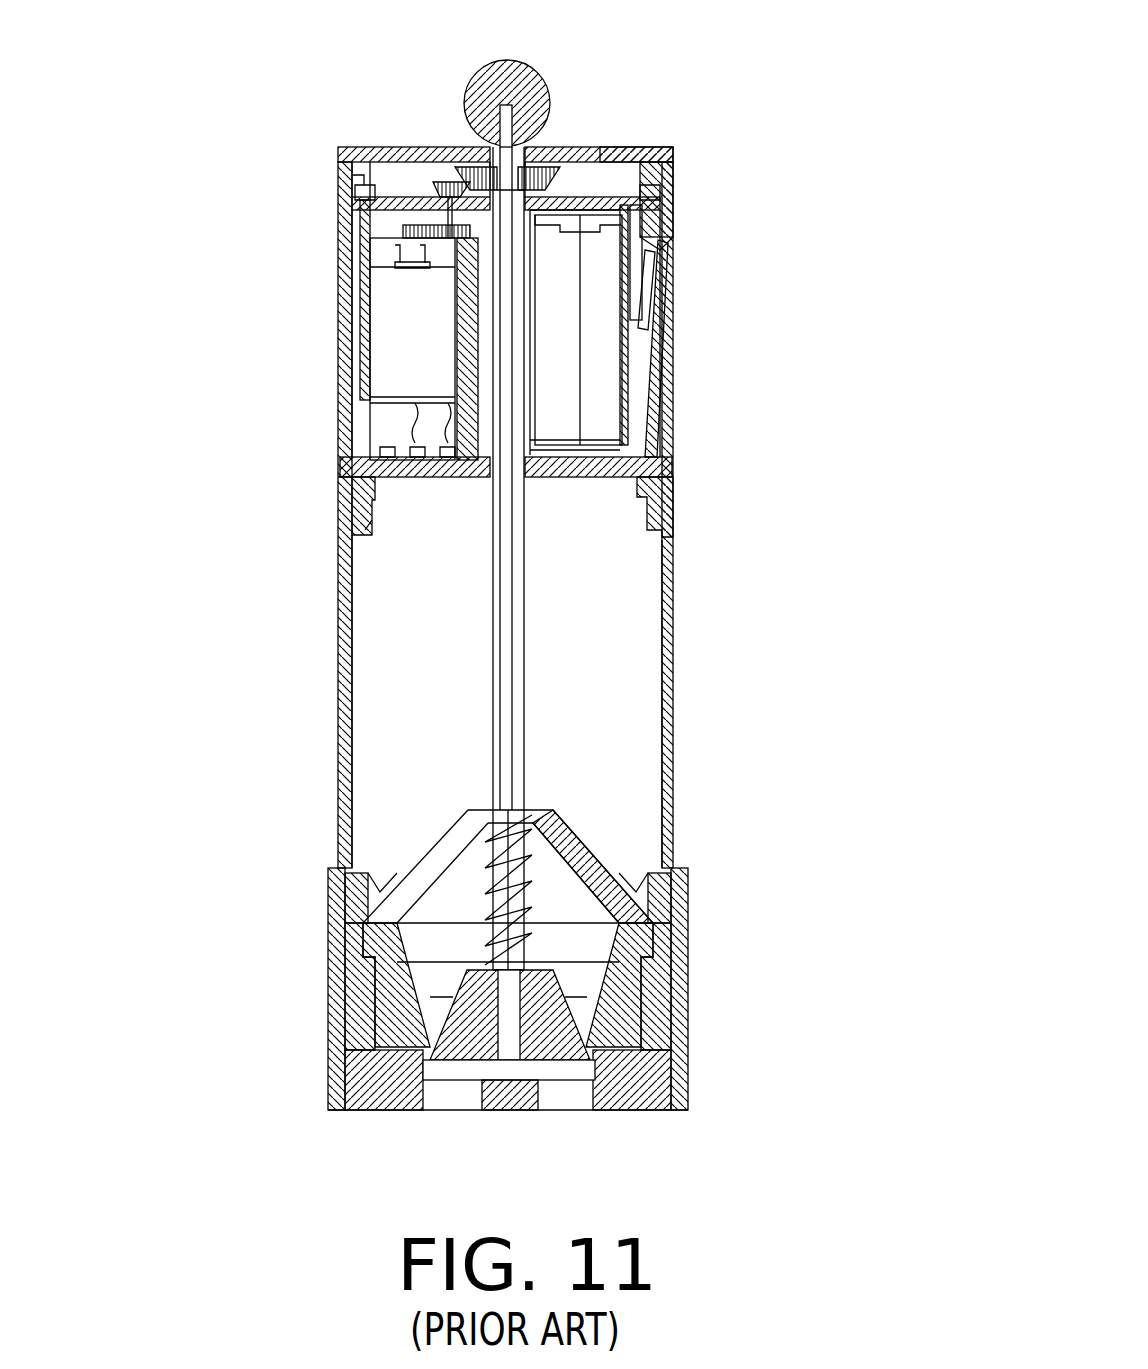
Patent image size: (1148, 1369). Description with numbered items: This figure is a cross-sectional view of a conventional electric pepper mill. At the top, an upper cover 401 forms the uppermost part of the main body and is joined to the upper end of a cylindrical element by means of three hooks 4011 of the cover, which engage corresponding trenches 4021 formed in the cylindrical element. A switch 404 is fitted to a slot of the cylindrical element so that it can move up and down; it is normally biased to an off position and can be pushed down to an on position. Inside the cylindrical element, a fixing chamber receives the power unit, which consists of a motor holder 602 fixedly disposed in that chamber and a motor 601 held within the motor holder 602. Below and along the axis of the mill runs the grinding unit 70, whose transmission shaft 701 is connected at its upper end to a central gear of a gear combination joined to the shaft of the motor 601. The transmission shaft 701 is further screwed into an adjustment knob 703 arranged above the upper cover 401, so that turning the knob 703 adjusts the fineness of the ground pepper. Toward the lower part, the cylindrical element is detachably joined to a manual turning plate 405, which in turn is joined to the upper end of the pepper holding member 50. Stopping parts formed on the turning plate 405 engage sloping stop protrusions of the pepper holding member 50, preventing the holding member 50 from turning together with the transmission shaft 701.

The adjustment knob 703 is at (530, 66).
The upper cover 401 is at (578, 147).
The hooks 4011 is at (660, 148).
The trenches 4021 is at (667, 192).
The switch 404 is at (672, 255).
The motor holder 602 is at (473, 347).
The motor 601 is at (387, 362).
The pepper holding member 50 is at (343, 605).
The manual turning plate 405 is at (440, 478).
The transmission shaft 701 is at (500, 705).
The grinding unit 70 is at (560, 1000).